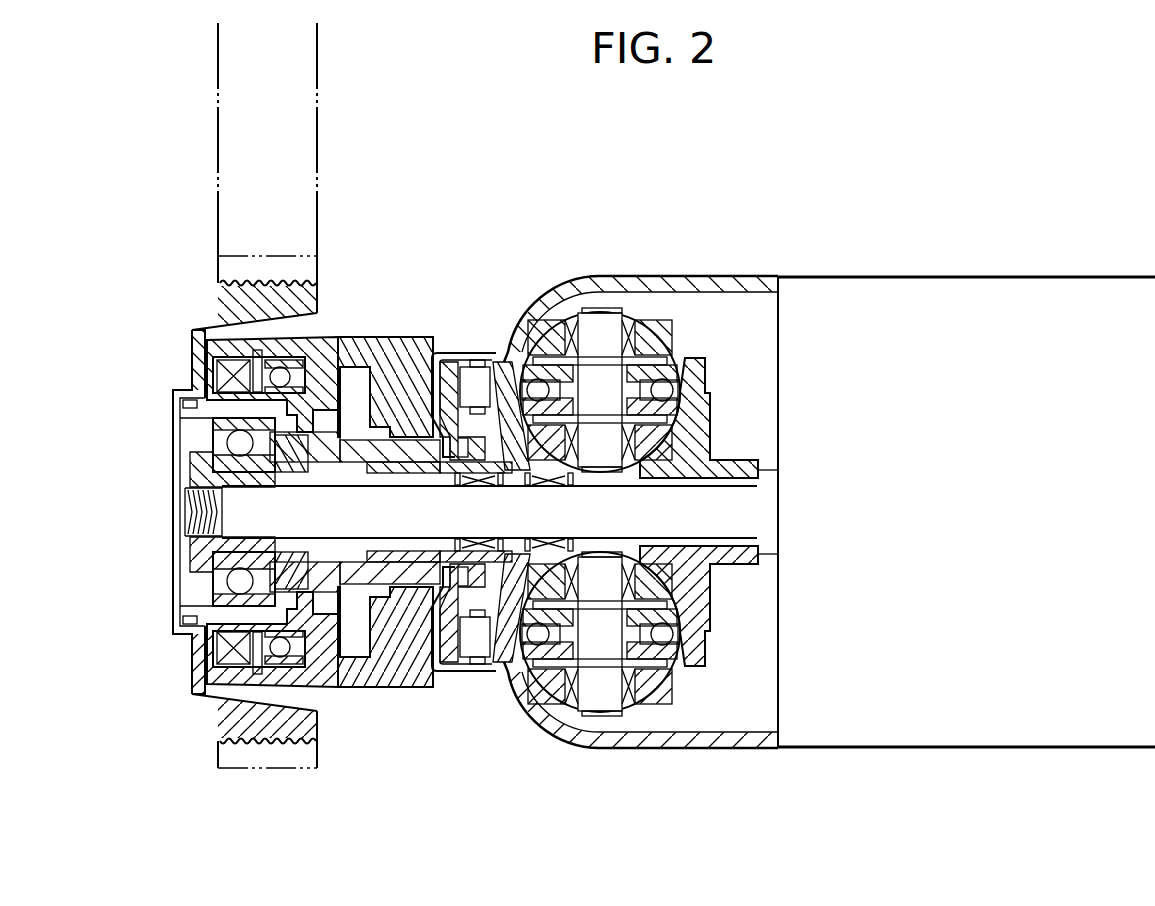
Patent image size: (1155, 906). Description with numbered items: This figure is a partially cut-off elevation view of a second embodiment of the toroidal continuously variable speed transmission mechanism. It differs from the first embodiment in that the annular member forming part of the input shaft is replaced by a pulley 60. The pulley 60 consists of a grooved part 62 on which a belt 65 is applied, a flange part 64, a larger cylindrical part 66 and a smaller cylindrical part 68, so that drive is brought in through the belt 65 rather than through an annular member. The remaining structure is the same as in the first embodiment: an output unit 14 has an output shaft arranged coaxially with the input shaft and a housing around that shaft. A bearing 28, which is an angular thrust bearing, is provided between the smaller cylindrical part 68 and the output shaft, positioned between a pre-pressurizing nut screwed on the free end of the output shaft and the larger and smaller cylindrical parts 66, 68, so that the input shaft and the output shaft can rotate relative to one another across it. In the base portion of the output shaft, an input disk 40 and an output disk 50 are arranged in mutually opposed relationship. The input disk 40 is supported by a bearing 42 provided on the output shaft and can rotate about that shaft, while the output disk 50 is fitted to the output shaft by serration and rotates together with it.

The output unit 14 is at (950, 746).
The bearing 28 is at (268, 558).
The input disk 40 is at (502, 350).
The bearing 42 is at (613, 301).
The output disk 50 is at (710, 356).
The pulley 60 is at (330, 305).
The grooved part 62 is at (330, 287).
The flange part 64 is at (193, 338).
The belt 65 is at (320, 182).
The larger cylindrical part 66 is at (341, 688).
The smaller cylindrical part 68 is at (349, 561).